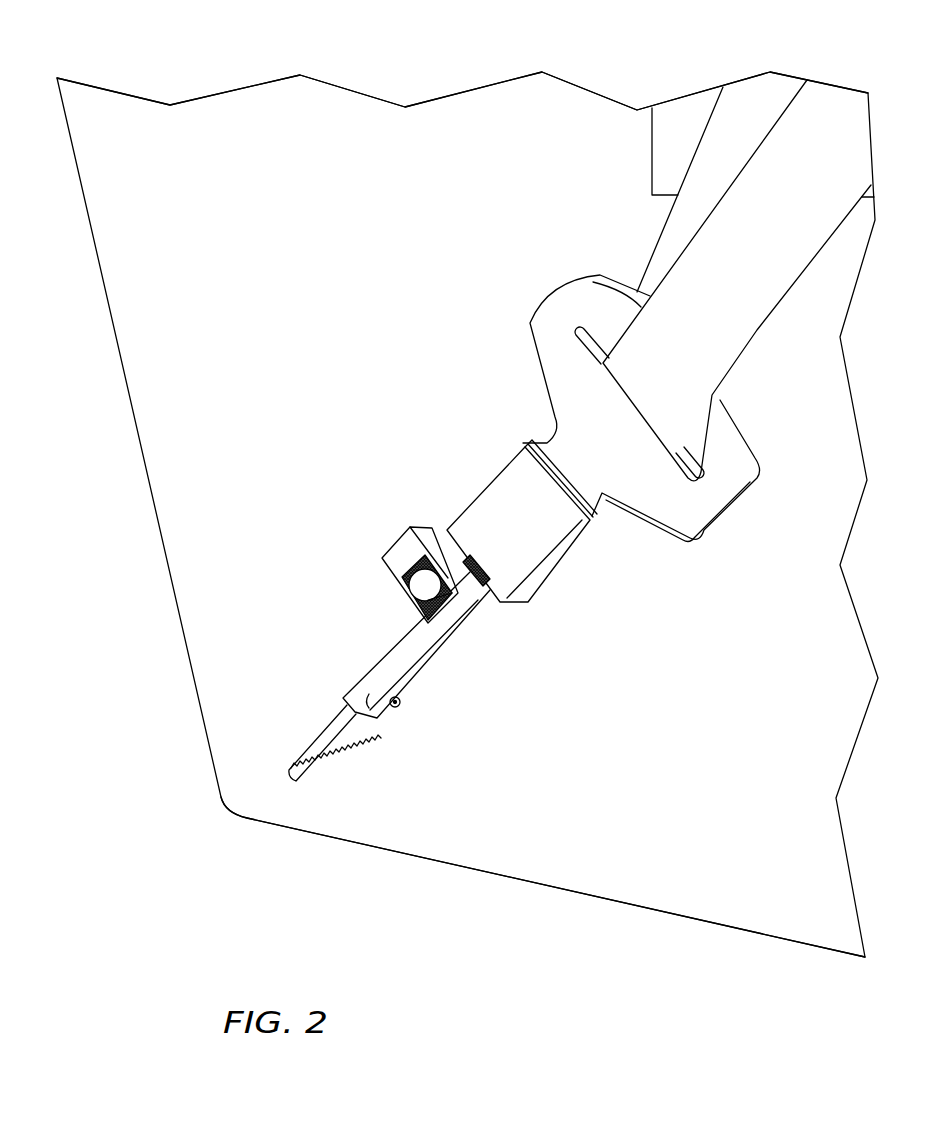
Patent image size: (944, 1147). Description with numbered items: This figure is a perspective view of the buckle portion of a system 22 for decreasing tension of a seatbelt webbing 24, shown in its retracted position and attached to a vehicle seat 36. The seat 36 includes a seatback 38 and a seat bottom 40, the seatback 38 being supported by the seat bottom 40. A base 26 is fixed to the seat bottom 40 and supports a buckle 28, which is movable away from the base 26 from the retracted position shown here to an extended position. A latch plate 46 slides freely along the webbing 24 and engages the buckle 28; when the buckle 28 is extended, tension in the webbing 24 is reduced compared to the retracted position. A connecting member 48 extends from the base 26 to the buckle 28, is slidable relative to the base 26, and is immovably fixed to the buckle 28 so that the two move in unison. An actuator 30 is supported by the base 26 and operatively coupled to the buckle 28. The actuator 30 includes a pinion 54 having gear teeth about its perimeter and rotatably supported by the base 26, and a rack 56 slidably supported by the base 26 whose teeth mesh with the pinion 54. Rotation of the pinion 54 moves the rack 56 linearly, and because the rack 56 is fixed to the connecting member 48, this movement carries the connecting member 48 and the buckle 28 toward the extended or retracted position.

The system 22 is at (288, 647).
The seatbelt webbing 24 is at (723, 333).
The base 26 is at (377, 717).
The buckle 28 is at (502, 503).
The actuator 30 is at (383, 606).
The seat 36 is at (108, 531).
The seatback 38 is at (385, 152).
The seat bottom 40 is at (732, 872).
The latch plate 46 is at (657, 483).
The connecting member 48 is at (483, 587).
The pinion 54 is at (422, 577).
The rack 56 is at (437, 622).